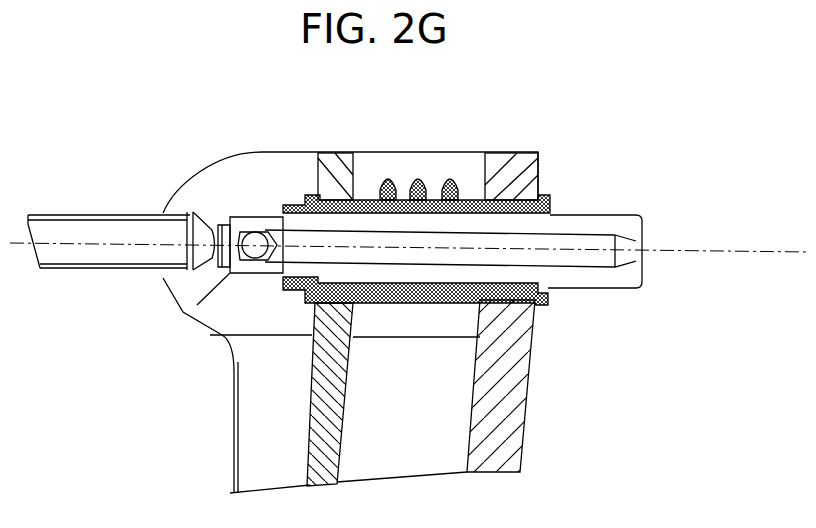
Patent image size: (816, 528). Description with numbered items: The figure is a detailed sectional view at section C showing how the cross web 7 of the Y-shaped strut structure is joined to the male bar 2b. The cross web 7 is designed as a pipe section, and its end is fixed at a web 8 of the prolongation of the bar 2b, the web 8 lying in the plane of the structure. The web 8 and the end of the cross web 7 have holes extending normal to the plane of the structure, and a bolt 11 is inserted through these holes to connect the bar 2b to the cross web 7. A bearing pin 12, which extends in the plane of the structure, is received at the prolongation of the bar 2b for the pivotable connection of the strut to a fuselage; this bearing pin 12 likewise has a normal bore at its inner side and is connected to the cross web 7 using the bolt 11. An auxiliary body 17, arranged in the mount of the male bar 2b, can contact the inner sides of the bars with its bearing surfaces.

The cross web 7 is at (56, 202).
The web 8 is at (267, 202).
The bolt 11 is at (246, 264).
The bearing pin 12 is at (596, 206).
The auxiliary body 17 is at (463, 200).
The section C is at (410, 87).
The male bar 2b is at (550, 416).